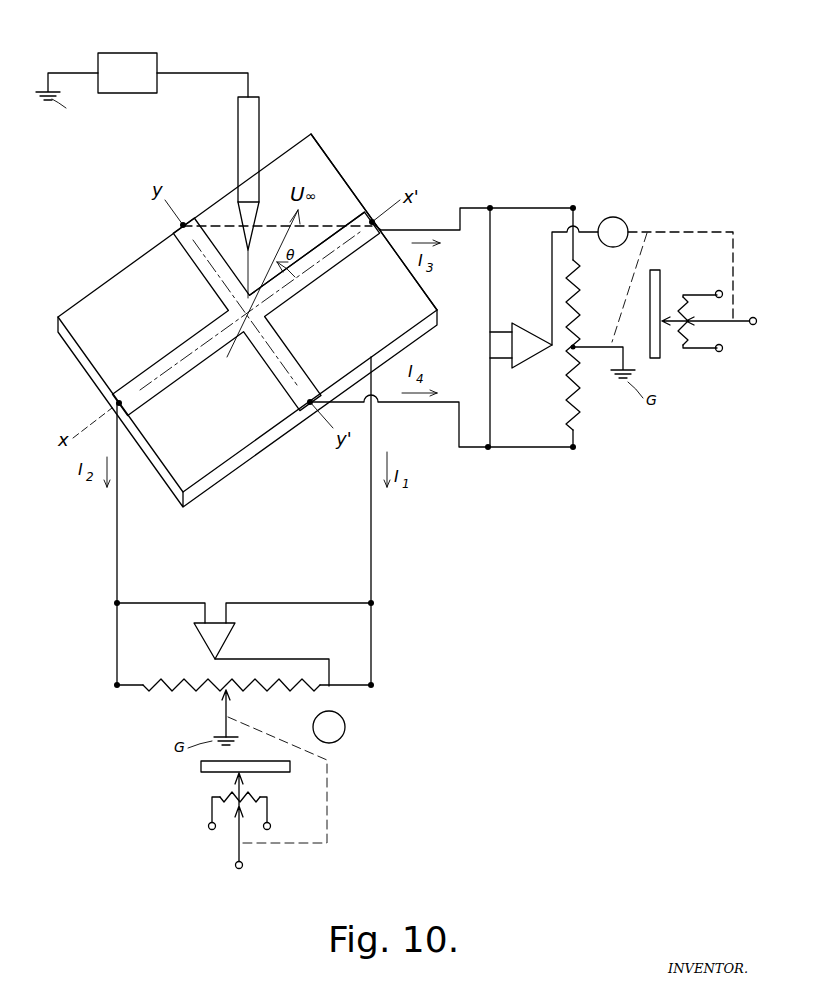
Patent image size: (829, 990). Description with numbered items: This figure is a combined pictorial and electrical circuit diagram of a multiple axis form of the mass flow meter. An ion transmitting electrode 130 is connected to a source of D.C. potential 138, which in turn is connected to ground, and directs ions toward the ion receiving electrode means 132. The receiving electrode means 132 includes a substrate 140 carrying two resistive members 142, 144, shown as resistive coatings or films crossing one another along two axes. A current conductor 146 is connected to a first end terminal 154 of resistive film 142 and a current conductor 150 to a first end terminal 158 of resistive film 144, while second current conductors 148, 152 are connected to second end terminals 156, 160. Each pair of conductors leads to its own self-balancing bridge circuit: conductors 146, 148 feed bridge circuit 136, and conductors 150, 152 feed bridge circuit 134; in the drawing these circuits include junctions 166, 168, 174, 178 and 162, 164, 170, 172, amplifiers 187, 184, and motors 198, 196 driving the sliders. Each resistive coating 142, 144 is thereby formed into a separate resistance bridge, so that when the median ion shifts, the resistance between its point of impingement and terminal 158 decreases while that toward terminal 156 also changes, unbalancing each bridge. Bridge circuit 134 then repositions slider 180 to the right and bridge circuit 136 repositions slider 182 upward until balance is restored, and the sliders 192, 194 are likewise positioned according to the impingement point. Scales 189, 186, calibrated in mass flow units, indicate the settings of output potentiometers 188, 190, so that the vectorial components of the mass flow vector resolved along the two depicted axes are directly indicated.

The ion transmitting electrode 130 is at (260, 122).
The ion receiving electrode means 132 is at (377, 327).
The bridge circuit 134 is at (436, 656).
The bridge circuit 136 is at (593, 498).
The source of D.C. potential 138 is at (118, 52).
The substrate 140 is at (333, 165).
The resistive member 142 is at (286, 350).
The resistive member 144 is at (337, 268).
The current conductor 146 is at (405, 403).
The current conductor 148 is at (452, 234).
The current conductor 150 is at (371, 532).
The current conductor 152 is at (117, 533).
The first end terminal 154 is at (310, 404).
The second end terminal 156 is at (183, 227).
The first end terminal 158 is at (372, 222).
The second end terminal 160 is at (119, 403).
The junction 162 is at (117, 603).
The junction 164 is at (371, 603).
The junction 166 is at (488, 449).
The junction 168 is at (490, 206).
The junction 170 is at (117, 685).
The junction 172 is at (371, 685).
The junction 174 is at (575, 447).
The junction 178 is at (573, 206).
The variable position slider 180 is at (225, 706).
The variable position slider 182 is at (592, 350).
The amplifier 184 is at (232, 646).
The scale 186 is at (661, 290).
The amplifier 187 is at (530, 332).
The output potentiometer 188 is at (268, 786).
The scale 189 is at (200, 768).
The output potentiometer 190 is at (668, 346).
The variable position slider 192 is at (237, 832).
The variable position slider 194 is at (742, 324).
The motor 196 is at (345, 727).
The motor 198 is at (624, 220).